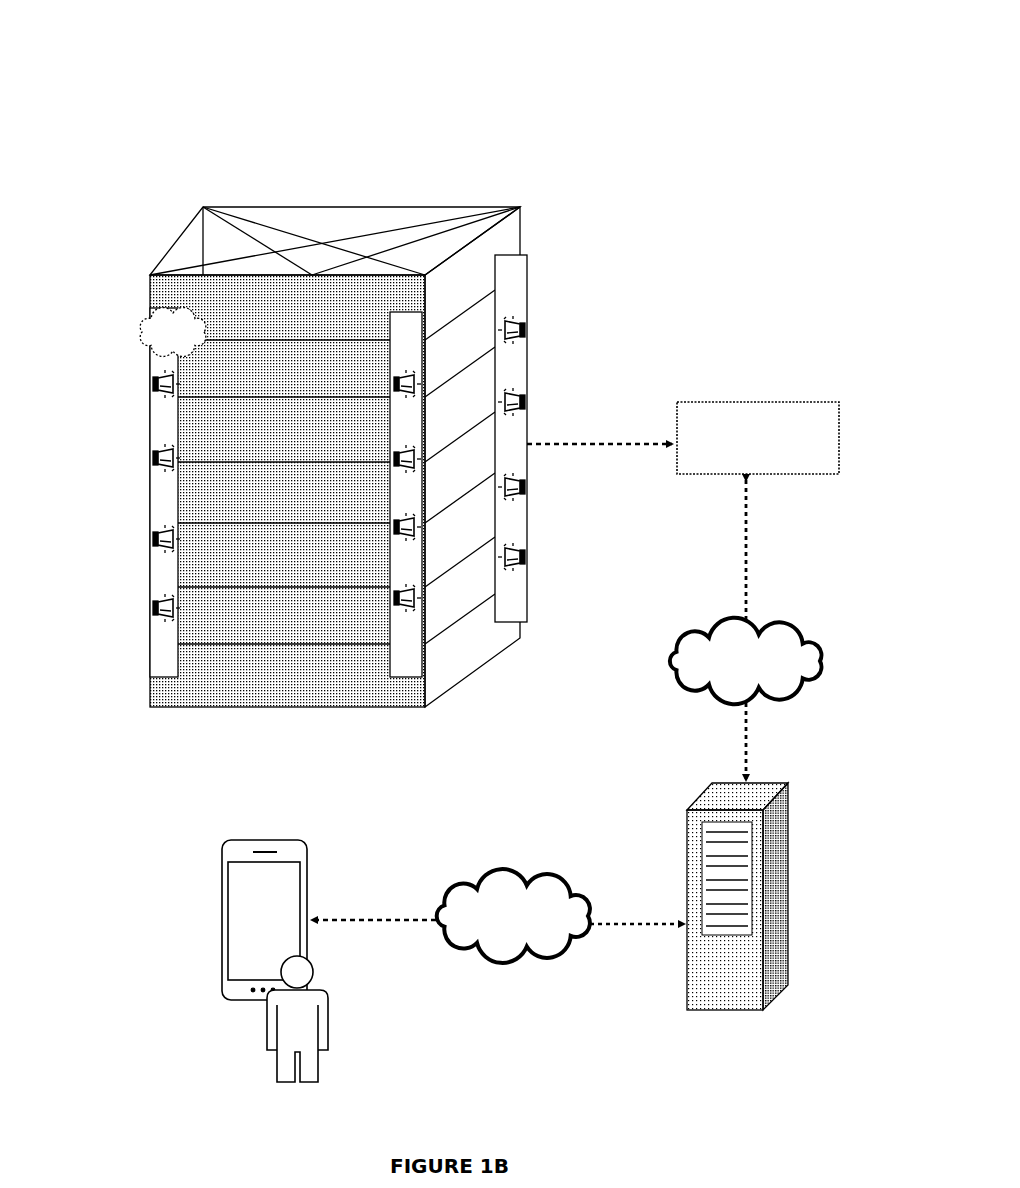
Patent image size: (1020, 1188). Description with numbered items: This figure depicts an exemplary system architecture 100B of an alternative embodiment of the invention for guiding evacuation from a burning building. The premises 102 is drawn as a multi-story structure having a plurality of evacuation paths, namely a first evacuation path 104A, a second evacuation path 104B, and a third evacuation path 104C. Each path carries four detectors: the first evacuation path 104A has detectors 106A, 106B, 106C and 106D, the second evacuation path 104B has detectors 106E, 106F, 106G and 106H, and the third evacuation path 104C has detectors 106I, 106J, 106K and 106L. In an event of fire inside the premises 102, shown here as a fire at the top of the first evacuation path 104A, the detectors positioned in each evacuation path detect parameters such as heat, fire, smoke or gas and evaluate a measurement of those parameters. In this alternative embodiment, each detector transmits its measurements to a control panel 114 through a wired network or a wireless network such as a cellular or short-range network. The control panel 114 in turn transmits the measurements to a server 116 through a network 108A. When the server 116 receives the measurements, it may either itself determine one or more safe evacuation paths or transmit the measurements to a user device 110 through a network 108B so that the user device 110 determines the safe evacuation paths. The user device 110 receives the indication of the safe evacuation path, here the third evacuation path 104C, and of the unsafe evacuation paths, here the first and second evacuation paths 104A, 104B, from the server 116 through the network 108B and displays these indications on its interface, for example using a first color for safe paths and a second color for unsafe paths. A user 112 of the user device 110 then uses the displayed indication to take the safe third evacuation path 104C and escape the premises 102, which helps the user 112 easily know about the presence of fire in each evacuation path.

The system architecture 100B is at (453, 92).
The premises 102 is at (395, 207).
The first evacuation path 104A is at (150, 310).
The second evacuation path 104B is at (441, 295).
The third evacuation path 104C is at (527, 252).
The detector 106A is at (152, 389).
The detector 106B is at (152, 463).
The detector 106C is at (152, 544).
The detector 106D is at (152, 614).
The detector 106E is at (393, 389).
The detector 106F is at (393, 464).
The detector 106G is at (393, 533).
The detector 106H is at (393, 604).
The detector 106I is at (528, 326).
The detector 106J is at (528, 398).
The detector 106K is at (528, 483).
The detector 106L is at (528, 553).
The network 108A is at (783, 632).
The network 108B is at (517, 882).
The user device 110 is at (258, 838).
The user 112 is at (327, 991).
The control panel 114 is at (748, 402).
The server 116 is at (785, 845).